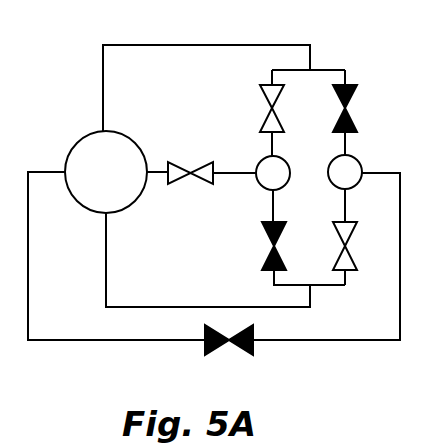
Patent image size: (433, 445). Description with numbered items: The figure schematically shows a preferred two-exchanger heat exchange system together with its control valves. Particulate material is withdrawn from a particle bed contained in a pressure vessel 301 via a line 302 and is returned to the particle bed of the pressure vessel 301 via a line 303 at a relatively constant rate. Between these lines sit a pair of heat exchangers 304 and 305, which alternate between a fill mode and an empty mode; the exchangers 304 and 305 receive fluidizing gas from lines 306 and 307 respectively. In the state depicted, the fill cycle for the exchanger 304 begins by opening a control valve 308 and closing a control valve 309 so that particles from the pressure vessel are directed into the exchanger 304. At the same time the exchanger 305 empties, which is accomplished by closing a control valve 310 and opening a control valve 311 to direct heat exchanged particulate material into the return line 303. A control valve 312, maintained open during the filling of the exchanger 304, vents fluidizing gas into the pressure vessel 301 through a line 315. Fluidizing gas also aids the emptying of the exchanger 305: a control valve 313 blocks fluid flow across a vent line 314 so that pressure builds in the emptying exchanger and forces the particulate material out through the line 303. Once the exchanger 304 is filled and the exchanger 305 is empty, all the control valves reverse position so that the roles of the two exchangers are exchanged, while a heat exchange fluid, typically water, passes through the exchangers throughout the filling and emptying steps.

The pressure vessel 301 is at (78, 141).
The line 302 is at (240, 46).
The line 303 is at (174, 307).
The heat exchanger 304 is at (261, 160).
The heat exchanger 305 is at (362, 170).
The line 306 is at (260, 187).
The line 307 is at (357, 161).
The control valve 308 is at (263, 102).
The control valve 309 is at (353, 98).
The control valve 310 is at (263, 252).
The control valve 311 is at (338, 240).
The control valve 312 is at (194, 184).
The control valve 313 is at (212, 350).
The vent line 314 is at (312, 341).
The line 315 is at (156, 148).